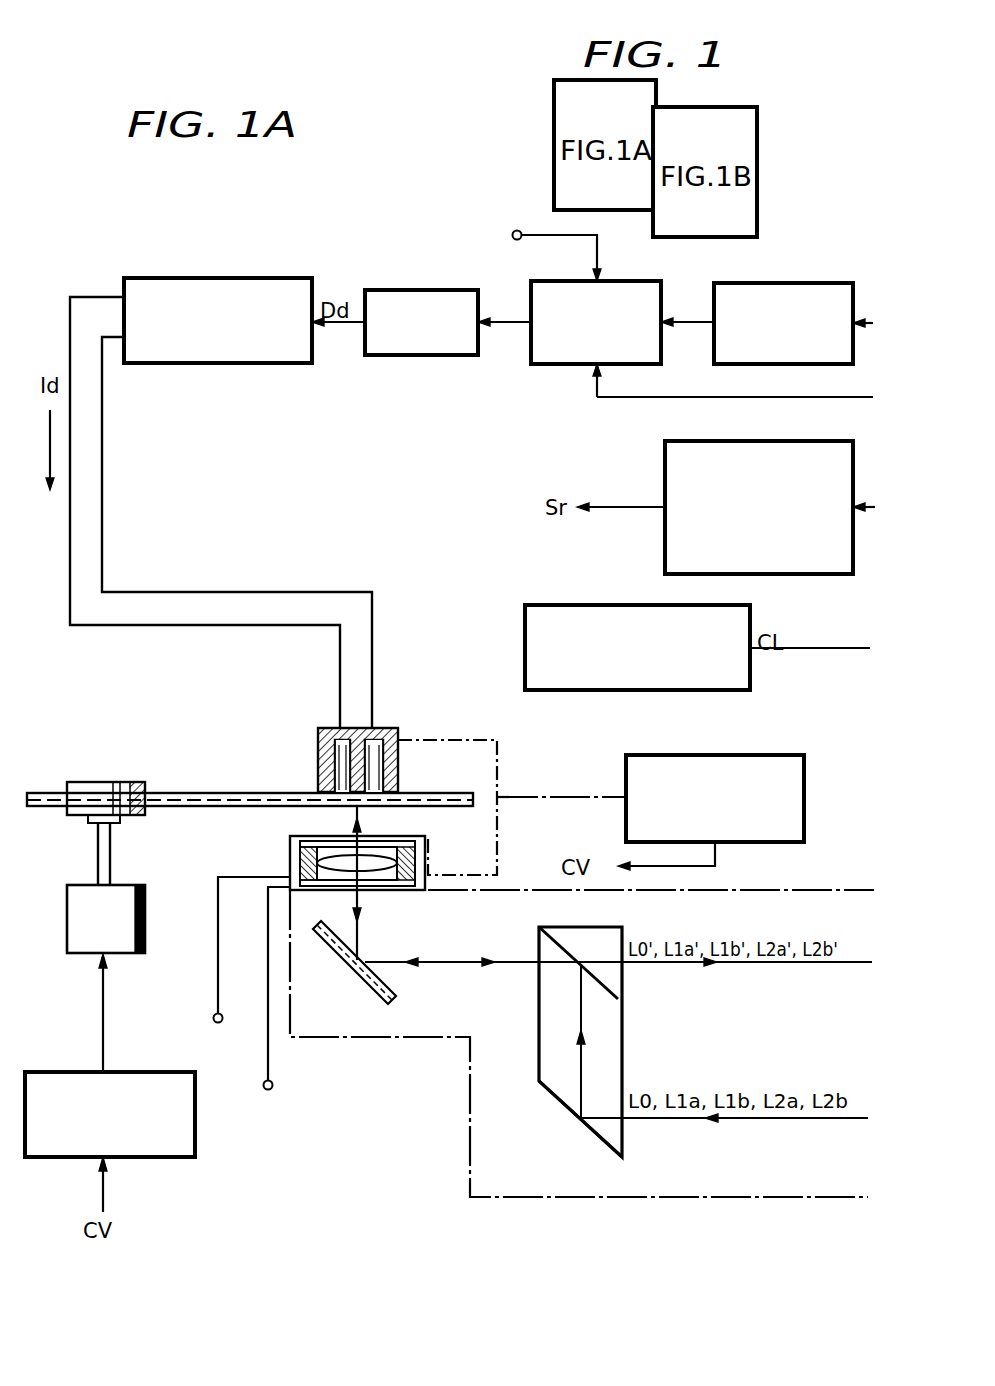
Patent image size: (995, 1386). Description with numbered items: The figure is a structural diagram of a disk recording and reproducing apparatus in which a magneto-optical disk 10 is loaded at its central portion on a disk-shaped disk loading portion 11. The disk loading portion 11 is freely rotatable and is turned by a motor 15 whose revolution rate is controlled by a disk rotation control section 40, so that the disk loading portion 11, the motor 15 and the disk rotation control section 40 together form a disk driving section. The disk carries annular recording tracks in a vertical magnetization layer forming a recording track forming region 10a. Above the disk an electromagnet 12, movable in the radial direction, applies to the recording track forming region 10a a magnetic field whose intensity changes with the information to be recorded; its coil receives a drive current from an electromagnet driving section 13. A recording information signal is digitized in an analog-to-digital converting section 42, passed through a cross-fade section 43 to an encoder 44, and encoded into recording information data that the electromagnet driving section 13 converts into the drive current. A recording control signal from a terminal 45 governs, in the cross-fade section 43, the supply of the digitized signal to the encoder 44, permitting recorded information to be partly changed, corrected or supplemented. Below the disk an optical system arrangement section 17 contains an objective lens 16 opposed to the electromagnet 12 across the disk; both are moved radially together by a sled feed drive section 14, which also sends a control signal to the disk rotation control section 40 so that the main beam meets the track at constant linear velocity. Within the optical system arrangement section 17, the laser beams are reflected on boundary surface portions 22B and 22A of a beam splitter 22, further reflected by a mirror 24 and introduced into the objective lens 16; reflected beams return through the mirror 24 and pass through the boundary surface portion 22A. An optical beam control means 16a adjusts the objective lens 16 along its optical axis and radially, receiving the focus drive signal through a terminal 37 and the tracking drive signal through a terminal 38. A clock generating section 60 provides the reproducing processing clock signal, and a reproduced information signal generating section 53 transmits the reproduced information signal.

The magneto-optical disk 10 is at (190, 793).
The recording track forming region 10a is at (428, 757).
The disk loading portion 11 is at (135, 815).
The electromagnet 12 is at (318, 744).
The electromagnet driving section 13 is at (248, 278).
The sled feed drive section 14 is at (804, 805).
The motor 15 is at (78, 953).
The objective lens 16 is at (395, 840).
The optical beam control means 16a is at (290, 850).
The optical system arrangement section 17 is at (470, 1166).
The beam splitter 22 is at (515, 1011).
The boundary surface portion 22A is at (548, 945).
The boundary surface portion 22B is at (563, 1112).
The mirror 24 is at (357, 978).
The terminal 37 is at (214, 1016).
The terminal 38 is at (272, 1083).
The disk rotation control section 40 is at (195, 1155).
The analog-to-digital (A/D) converting section 42 is at (810, 283).
The cross-fade section 43 is at (562, 364).
The encoder 44 is at (410, 290).
The terminal 45 is at (517, 230).
The reproduced information signal generating section 53 is at (752, 441).
The clock generating section 60 is at (525, 628).